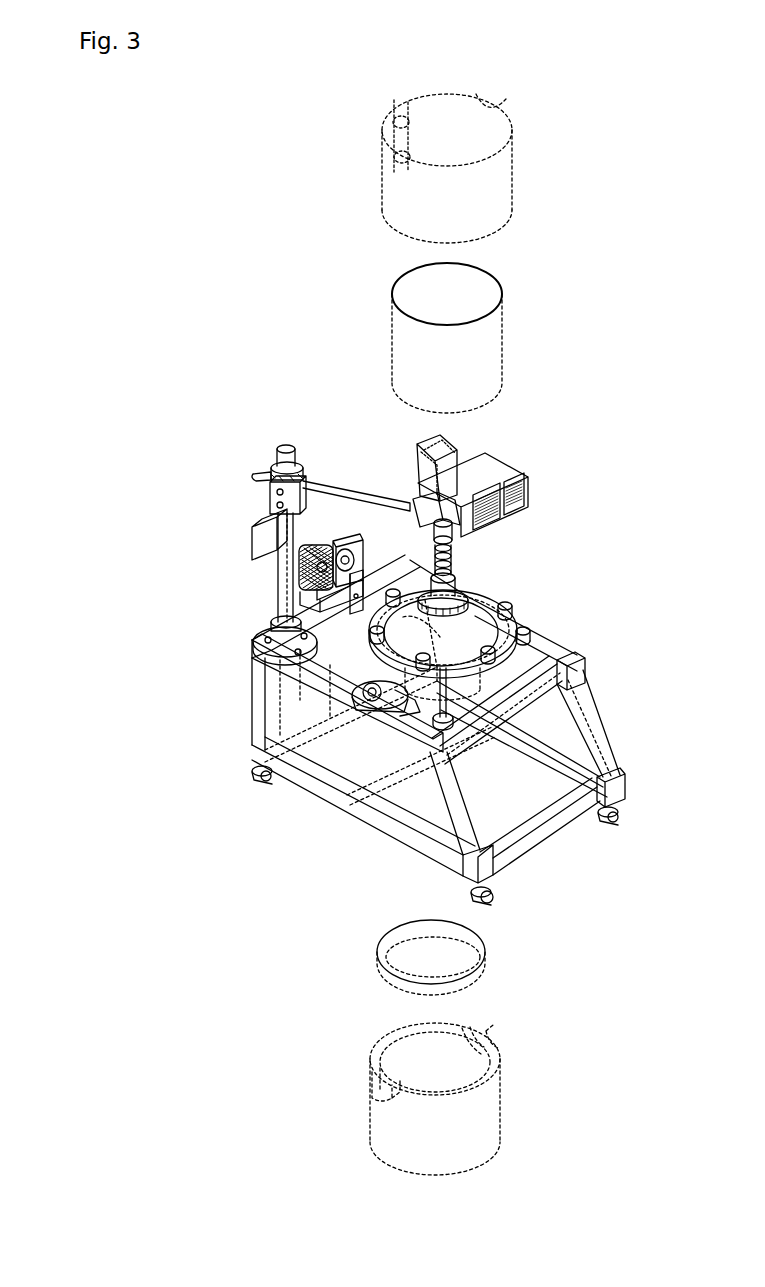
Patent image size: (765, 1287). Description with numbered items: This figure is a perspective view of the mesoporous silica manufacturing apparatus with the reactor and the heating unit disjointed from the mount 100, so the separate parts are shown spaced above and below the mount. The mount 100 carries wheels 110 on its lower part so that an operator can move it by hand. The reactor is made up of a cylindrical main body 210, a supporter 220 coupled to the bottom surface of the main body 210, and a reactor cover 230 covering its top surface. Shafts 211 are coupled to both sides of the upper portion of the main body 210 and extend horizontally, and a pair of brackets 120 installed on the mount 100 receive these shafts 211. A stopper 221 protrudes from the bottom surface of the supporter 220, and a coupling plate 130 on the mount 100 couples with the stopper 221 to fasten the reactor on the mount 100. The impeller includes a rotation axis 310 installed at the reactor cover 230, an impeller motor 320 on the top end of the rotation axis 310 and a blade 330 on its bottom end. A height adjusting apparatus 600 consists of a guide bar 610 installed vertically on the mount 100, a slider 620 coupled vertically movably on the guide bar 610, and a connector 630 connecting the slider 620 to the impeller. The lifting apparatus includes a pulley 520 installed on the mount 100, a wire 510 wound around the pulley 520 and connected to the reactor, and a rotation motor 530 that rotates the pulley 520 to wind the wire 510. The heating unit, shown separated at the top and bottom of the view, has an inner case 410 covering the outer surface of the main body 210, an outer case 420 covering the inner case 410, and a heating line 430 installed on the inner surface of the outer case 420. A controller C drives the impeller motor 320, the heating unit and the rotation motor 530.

The mount 100 is at (593, 728).
The caster 110 is at (262, 780).
The brackets 120 is at (352, 690).
The coupling plate 130 is at (456, 762).
The main body 210 is at (493, 348).
The shafts 211 is at (262, 638).
The supporter 220 is at (487, 945).
The stopper 221 is at (447, 992).
The reactor cover 230 is at (493, 602).
The rotation axis 310 is at (467, 530).
The impeller motor 320 is at (425, 488).
The blade 330 is at (480, 755).
The inner case 410 is at (492, 1108).
The outer case 420 is at (498, 190).
The heating line 430 is at (394, 112).
The wire 510 is at (355, 560).
The pulley 520 is at (320, 547).
The rotation motor 530 is at (250, 537).
The height adjusting apparatus 600 is at (268, 470).
The guide bar 610 is at (278, 581).
The slider 620 is at (268, 493).
The connector 630 is at (316, 482).
The controller C is at (500, 468).